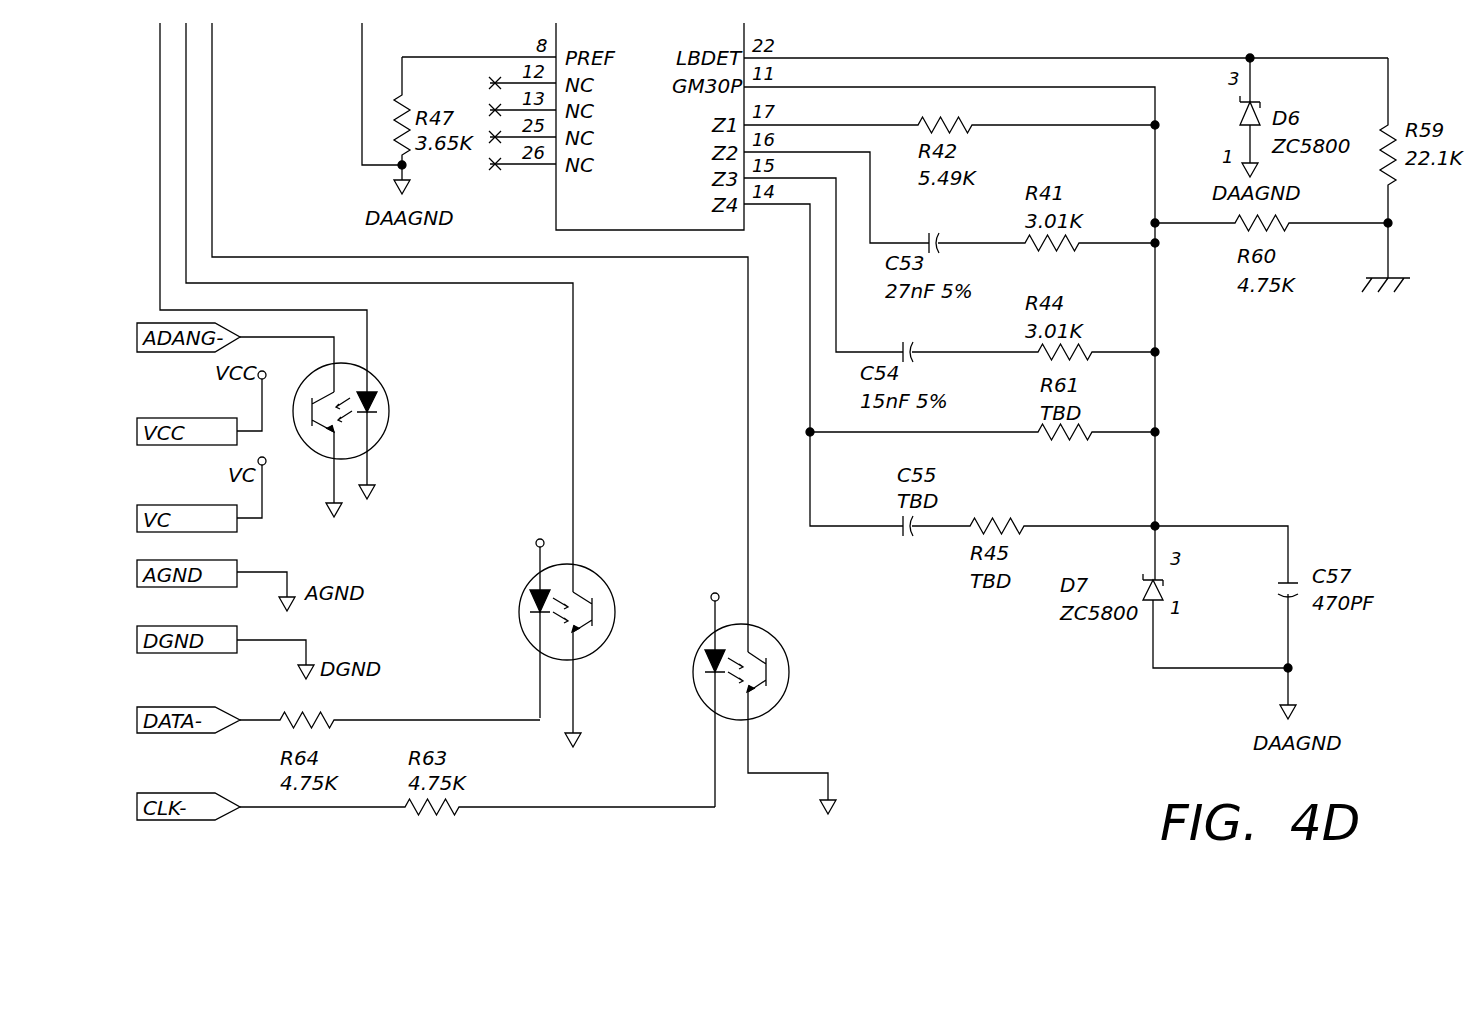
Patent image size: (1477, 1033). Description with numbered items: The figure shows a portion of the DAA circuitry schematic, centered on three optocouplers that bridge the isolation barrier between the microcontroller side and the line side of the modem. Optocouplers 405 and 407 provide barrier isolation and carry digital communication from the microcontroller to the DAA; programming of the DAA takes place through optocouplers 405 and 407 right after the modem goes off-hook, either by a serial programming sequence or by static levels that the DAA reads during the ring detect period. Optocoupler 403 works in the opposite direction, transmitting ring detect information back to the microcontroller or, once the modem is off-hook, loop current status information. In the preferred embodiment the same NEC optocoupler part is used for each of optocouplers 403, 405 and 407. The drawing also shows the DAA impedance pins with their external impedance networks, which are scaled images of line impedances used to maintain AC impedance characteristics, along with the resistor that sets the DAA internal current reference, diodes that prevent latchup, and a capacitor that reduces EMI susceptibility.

The optocoupler 403 is at (388, 418).
The optocoupler 405 is at (524, 640).
The optocoupler 407 is at (789, 676).